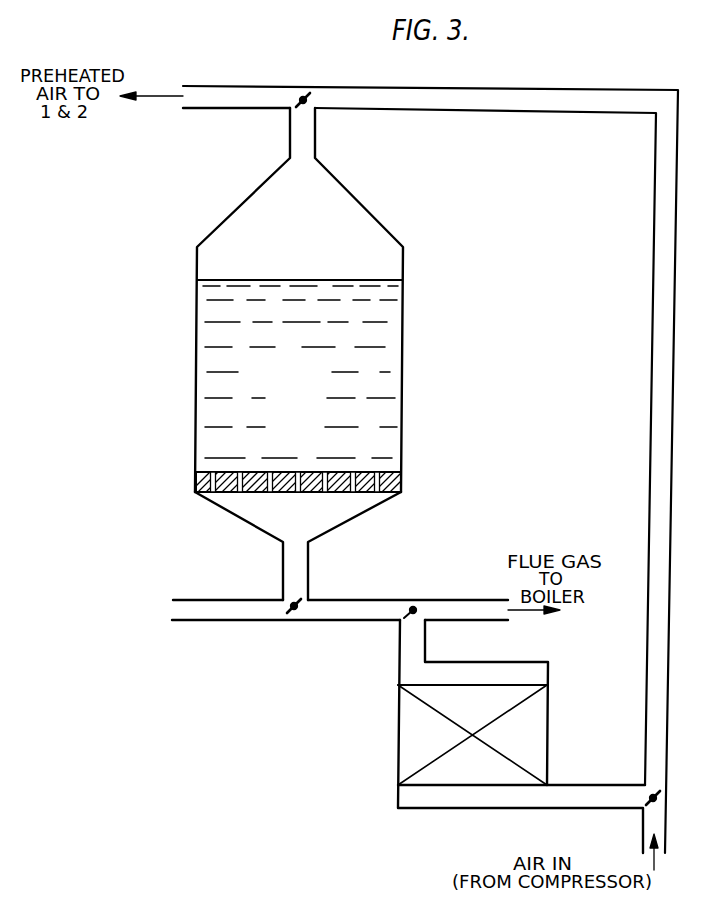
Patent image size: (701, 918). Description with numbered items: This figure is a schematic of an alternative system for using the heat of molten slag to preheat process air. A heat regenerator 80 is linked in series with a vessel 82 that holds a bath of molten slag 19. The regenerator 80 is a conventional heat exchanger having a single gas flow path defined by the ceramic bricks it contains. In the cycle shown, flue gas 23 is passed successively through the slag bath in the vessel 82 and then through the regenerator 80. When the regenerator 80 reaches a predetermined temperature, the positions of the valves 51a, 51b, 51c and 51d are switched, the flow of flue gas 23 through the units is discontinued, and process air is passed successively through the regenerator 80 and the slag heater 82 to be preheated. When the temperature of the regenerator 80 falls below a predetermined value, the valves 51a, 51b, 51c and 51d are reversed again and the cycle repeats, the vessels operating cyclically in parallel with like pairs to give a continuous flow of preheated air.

The vessel 82 is at (307, 242).
The molten slag 19 is at (284, 422).
The flue gas 23 is at (234, 606).
The heat regenerator 80 is at (434, 736).
The valve 51a is at (309, 95).
The valve 51b is at (296, 609).
The valve 51c is at (412, 606).
The valve 51d is at (657, 797).